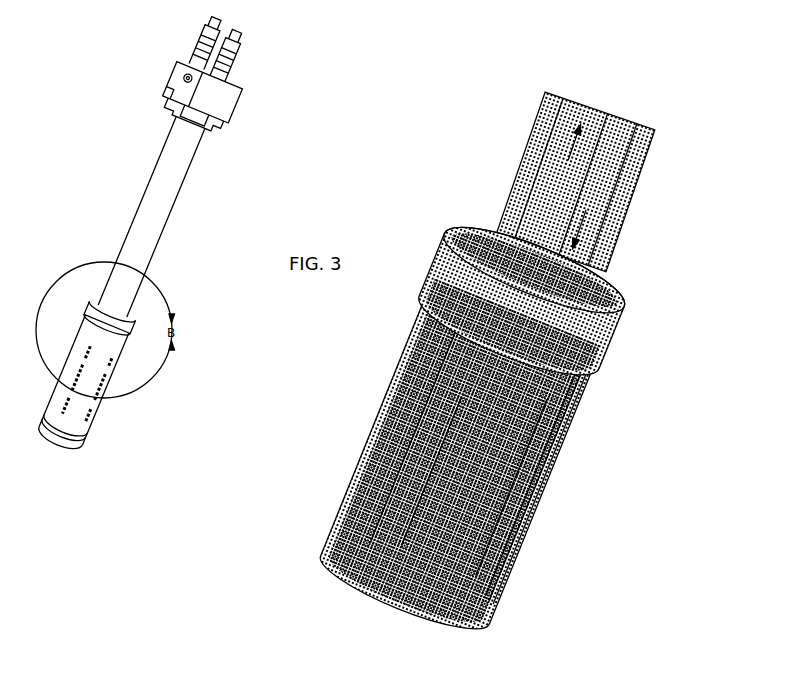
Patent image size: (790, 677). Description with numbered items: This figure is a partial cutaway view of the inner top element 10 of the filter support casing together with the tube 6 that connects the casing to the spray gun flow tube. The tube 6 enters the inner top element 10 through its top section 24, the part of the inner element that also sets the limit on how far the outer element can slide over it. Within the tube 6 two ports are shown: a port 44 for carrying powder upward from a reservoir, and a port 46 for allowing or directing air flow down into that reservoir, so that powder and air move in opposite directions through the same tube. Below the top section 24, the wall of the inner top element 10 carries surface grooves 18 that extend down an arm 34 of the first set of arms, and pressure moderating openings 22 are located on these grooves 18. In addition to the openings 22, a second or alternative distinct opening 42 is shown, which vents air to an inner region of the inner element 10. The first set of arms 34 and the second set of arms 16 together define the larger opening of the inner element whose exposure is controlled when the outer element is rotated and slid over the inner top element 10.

The tube 6 is at (604, 186).
The port 44 is at (523, 149).
The port 46 is at (643, 190).
The top section 24 is at (562, 301).
The inner top element 10 is at (516, 467).
The distinct opening 42 is at (595, 478).
The pressure moderating opening 22 is at (588, 482).
The surface groove 18 is at (521, 455).
The arm 34 is at (515, 472).
The second set of arms 16 is at (458, 470).